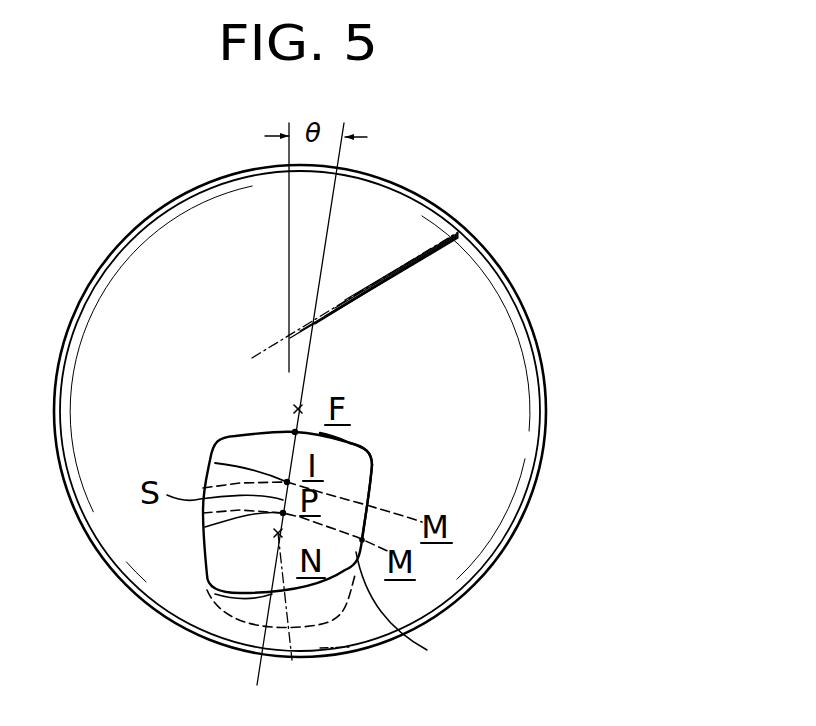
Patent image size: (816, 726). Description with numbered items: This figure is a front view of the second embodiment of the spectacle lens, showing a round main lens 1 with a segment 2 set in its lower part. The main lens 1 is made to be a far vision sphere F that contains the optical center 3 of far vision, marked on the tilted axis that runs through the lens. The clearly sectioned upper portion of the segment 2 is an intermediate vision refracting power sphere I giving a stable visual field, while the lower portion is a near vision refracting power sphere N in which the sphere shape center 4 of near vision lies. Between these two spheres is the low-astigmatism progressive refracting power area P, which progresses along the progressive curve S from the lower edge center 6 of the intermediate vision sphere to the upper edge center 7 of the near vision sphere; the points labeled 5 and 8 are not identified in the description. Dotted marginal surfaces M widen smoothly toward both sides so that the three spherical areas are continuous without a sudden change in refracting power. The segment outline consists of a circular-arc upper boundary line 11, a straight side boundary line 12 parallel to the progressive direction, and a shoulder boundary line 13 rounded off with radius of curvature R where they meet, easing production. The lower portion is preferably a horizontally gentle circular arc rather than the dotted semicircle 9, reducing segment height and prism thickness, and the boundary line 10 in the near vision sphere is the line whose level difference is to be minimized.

The main lens 1 is at (203, 267).
The segment 2 is at (222, 561).
The optical center of far vision 3 is at (294, 405).
The sphere shape center of near vision 4 is at (300, 415).
The edge point 5 is at (295, 432).
The lower edge center of the intermediate vision sphere 6 is at (215, 463).
The upper edge center of the near vision sphere 7 is at (205, 527).
The bottom curve 8 is at (215, 594).
The semicircle 9 is at (323, 617).
The boundary line in the near vision sphere 10 is at (406, 611).
The segment upper boundary line 11 is at (348, 441).
The segment side boundary line 12 is at (367, 488).
The segment shoulder boundary line 13 is at (375, 458).